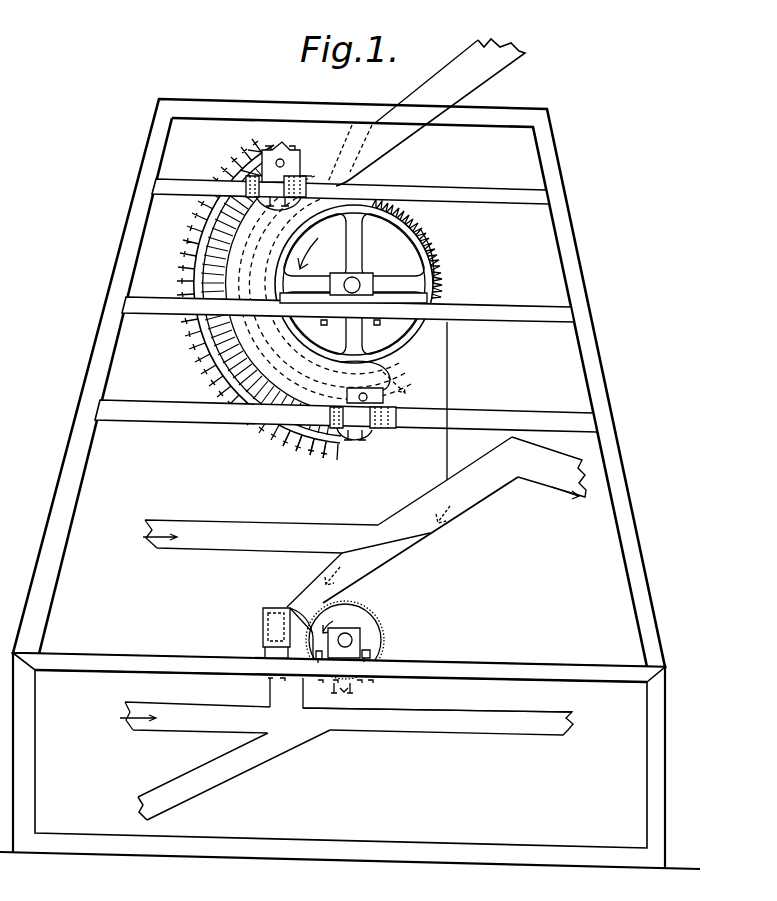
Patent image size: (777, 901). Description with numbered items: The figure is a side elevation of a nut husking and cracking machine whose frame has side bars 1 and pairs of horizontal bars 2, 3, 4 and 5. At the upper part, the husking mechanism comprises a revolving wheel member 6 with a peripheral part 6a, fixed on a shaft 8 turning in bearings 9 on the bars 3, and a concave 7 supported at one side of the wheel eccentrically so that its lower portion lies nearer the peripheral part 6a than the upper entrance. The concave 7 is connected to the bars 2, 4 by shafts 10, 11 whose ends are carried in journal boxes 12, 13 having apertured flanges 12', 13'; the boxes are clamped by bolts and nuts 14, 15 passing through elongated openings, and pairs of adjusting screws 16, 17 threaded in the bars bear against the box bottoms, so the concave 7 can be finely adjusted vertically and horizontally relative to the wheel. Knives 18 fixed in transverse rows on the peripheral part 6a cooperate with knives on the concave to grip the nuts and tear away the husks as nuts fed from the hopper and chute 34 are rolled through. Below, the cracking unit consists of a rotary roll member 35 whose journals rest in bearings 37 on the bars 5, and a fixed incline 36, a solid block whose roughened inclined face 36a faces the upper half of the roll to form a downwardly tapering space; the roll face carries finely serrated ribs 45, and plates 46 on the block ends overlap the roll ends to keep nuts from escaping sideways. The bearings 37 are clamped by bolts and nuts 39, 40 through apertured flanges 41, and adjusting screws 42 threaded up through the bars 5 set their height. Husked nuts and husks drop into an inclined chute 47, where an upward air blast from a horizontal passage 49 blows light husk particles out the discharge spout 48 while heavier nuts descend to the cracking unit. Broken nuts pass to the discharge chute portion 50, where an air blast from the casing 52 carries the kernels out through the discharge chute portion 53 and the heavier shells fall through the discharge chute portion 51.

The side bars 1 is at (213, 103).
The horizontally extending bars 2 is at (359, 118).
The horizontally extending bars 3 is at (497, 315).
The horizontally extending bars 4 is at (346, 410).
The horizontally extending bars 5 is at (159, 660).
The wheel member 6 is at (355, 249).
The peripheral part 6a is at (426, 262).
The concave 7 is at (193, 250).
The shaft 8 is at (370, 282).
The bearings 9 is at (308, 255).
The shaft 10 is at (287, 157).
The shaft 11 is at (388, 381).
The journal box 12 is at (251, 157).
The apertured flange 12' is at (317, 164).
The journal box 13 is at (410, 390).
The apertured flange 13' is at (387, 437).
The bolts and nuts 14 is at (267, 216).
The bolts and nuts 15 is at (345, 440).
The adjusting screws 16 is at (245, 187).
The adjusting screws 17 is at (329, 418).
The knives 18 is at (436, 233).
The hopper and chute 34 is at (509, 68).
The rotary roll member 35 is at (378, 627).
The fixed incline 36 is at (262, 632).
The inclined face 36a is at (268, 618).
The bearings 37 is at (363, 643).
The bolts and nuts 39 is at (316, 655).
The bolts and nuts 40 is at (372, 684).
The apertured flanges 41 is at (372, 660).
The adjusting screws 42 is at (342, 694).
The corrugations or ribs 45 is at (348, 603).
The plates 46 is at (448, 373).
The inclined chute 47 is at (455, 512).
The discharge spout 48 is at (571, 486).
The horizontally extending passage 49 is at (276, 523).
The discharge chute portion 50 is at (278, 694).
The discharge chute portion 51 is at (268, 758).
The horizontally extending casing 52 is at (185, 728).
The discharge chute portion 53 is at (452, 722).